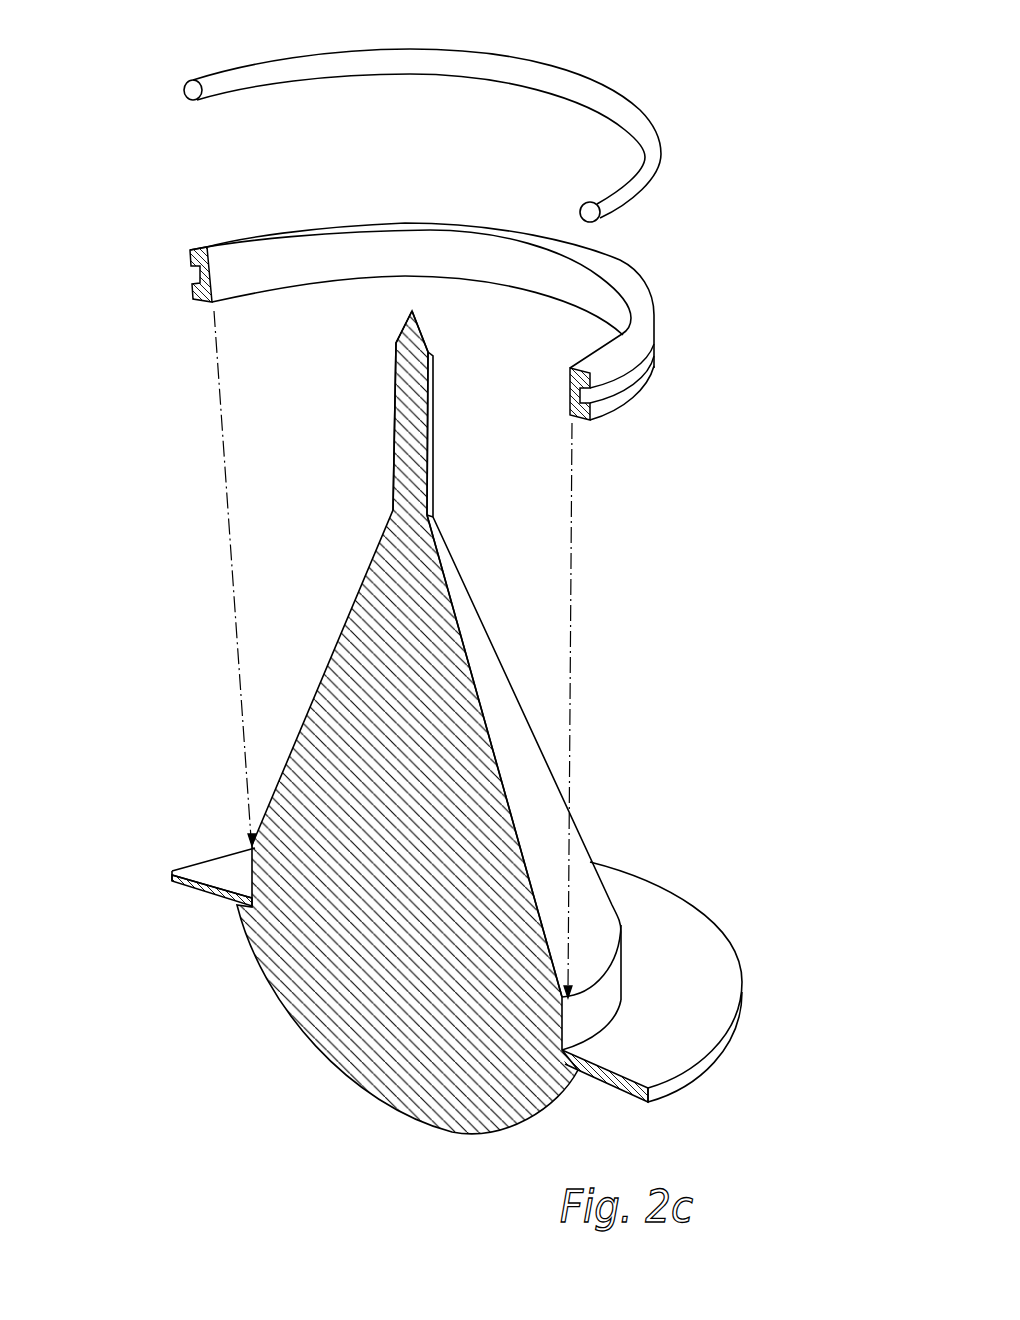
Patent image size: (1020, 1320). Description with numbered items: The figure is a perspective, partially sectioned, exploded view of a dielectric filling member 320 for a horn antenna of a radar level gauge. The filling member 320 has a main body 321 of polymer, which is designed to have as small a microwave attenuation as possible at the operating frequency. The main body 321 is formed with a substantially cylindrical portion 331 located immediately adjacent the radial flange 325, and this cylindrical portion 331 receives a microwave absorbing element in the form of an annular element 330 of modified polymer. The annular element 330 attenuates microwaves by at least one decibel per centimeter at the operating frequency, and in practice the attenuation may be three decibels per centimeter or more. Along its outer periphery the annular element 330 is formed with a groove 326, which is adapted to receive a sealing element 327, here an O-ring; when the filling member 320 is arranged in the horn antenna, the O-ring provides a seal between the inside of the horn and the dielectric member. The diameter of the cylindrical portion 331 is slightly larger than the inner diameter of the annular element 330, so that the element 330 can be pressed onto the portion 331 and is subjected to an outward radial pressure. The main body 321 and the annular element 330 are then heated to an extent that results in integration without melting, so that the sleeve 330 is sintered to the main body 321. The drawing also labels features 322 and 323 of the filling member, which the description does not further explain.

The dielectric filling member 320 is at (436, 567).
The main body 321 is at (429, 722).
The spike 322 is at (420, 420).
The conical surface 323 is at (457, 617).
The radial flange 325 is at (220, 870).
The groove 326 is at (197, 270).
The sealing element 327 is at (250, 73).
The annular element 330 is at (406, 312).
The cylindrical portion 331 is at (597, 998).